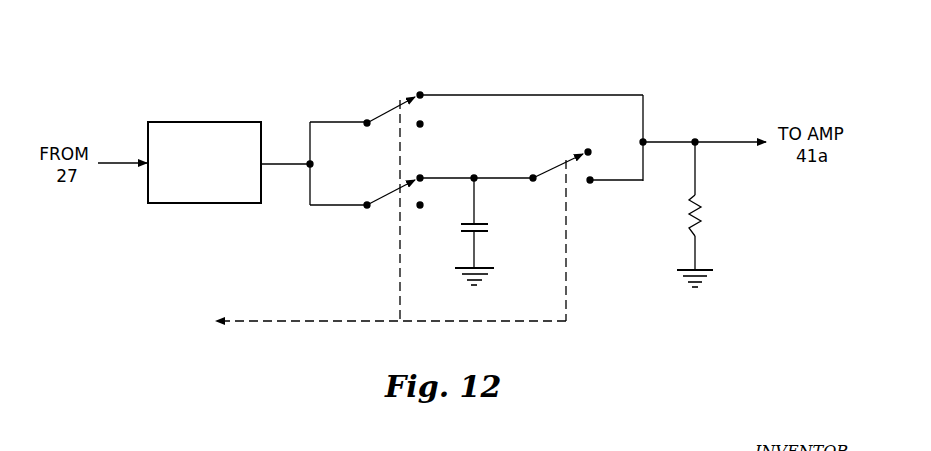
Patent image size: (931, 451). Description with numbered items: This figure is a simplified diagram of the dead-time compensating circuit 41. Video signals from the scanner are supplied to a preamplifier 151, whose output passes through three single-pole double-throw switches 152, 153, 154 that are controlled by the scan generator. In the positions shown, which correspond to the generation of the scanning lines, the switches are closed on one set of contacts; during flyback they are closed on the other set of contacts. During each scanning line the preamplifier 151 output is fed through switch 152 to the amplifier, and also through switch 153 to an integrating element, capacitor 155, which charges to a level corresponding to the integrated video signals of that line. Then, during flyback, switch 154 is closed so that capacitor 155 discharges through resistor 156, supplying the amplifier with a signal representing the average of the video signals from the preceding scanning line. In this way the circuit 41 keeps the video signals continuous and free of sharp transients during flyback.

The dead-time compensating circuit 41 is at (535, 77).
The preamplifier 151 is at (212, 122).
The single-pole double-throw switch 152 is at (393, 107).
The single-pole double-throw switch 153 is at (386, 199).
The single-pole double-throw switch 154 is at (560, 168).
The capacitor 155 is at (486, 224).
The resistor 156 is at (703, 213).